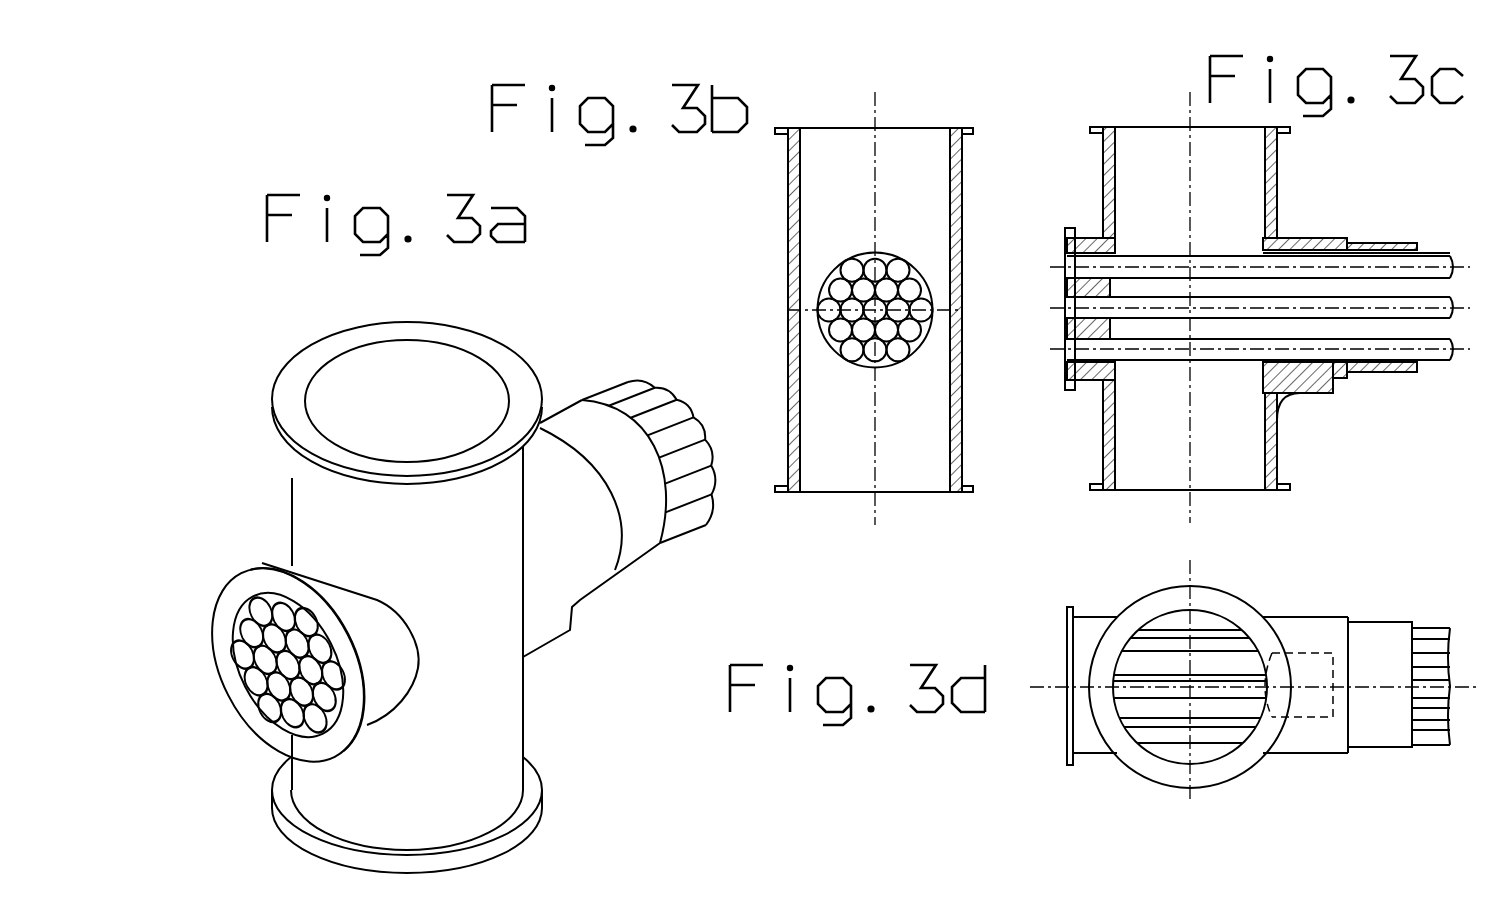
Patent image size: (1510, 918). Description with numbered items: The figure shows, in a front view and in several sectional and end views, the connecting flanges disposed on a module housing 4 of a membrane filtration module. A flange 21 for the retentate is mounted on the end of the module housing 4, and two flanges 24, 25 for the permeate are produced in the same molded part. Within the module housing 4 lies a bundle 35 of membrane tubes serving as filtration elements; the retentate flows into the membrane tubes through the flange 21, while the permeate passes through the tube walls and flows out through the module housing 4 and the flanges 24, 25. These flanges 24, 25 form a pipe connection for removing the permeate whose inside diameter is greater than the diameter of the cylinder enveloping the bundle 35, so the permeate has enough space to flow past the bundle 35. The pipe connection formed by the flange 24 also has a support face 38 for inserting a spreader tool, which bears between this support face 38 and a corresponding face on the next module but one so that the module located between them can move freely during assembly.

In FIG. 3a, the module housing 4 is at (641, 543).
In FIG. 3c, the module housing 4 is at (1388, 245).
In FIG. 3d, the module housing 4 is at (1373, 633).
In FIG. 3a, the flange 21 is at (242, 594).
In FIG. 3c, the flange 21 is at (1065, 238).
In FIG. 3d, the flange 21 is at (1068, 742).
In FIG. 3a, the flange 24 is at (537, 813).
In FIG. 3b, the flange 24 is at (960, 492).
In FIG. 3c, the flange 24 is at (1350, 532).
In FIG. 3a, the flange 25 is at (362, 338).
In FIG. 3b, the flange 25 is at (960, 128).
In FIG. 3c, the flange 25 is at (1098, 127).
In FIG. 3d, the flange 25 is at (1213, 765).
In FIG. 3a, the bundle 35 is at (191, 811).
In FIG. 3b, the bundle 35 is at (856, 246).
In FIG. 3c, the bundle 35 is at (1458, 246).
In FIG. 3d, the bundle 35 is at (1452, 618).
In FIG. 3a, the support face 38 is at (573, 637).
In FIG. 3c, the support face 38 is at (1307, 393).
In FIG. 3d, the support face 38 is at (1300, 658).